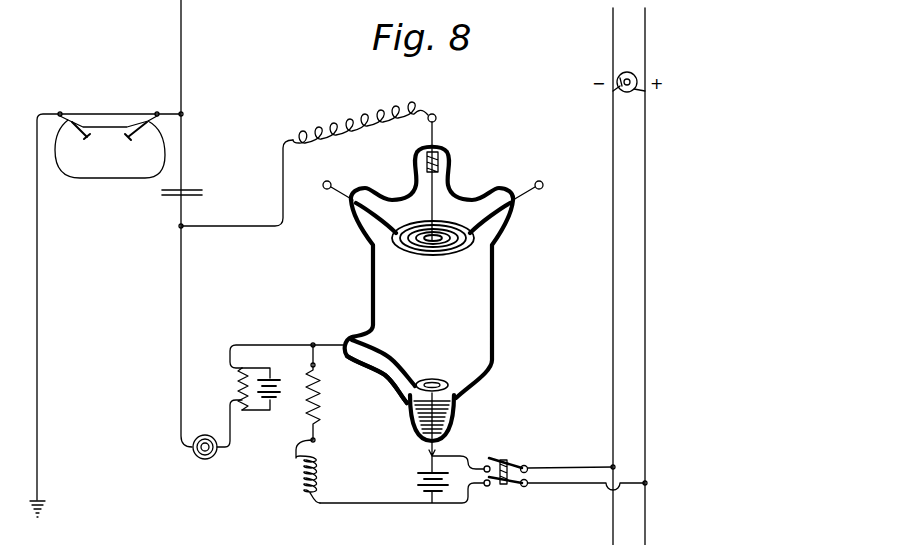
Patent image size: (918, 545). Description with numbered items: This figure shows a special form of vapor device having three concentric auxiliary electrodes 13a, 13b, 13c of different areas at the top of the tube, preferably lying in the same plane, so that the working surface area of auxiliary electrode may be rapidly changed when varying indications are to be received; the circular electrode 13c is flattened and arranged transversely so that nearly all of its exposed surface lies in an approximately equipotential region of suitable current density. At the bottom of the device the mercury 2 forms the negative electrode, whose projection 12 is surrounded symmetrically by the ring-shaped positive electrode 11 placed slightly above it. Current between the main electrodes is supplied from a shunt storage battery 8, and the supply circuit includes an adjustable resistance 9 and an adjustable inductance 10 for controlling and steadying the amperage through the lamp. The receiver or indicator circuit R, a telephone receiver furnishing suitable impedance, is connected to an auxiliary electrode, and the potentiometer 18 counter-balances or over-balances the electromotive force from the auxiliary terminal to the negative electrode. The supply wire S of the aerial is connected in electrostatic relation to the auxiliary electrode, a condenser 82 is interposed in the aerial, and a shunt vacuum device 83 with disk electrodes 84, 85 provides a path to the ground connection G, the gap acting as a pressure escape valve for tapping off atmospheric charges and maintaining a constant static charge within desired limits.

The supply wire S is at (190, 223).
The ground connection G is at (44, 514).
The shunt vacuum device 83 is at (110, 139).
The disk electrode 84 is at (76, 146).
The disk electrode 85 is at (136, 146).
The condenser 82 is at (193, 193).
The auxiliary electrode 13a is at (395, 247).
The auxiliary electrode 13b is at (437, 242).
The circular auxiliary electrode 13c is at (445, 247).
The positive electrode 11 is at (433, 379).
The projection of the negative electrode 12 is at (403, 396).
The mercury 2 is at (455, 412).
The storage battery 8 is at (423, 481).
The receiver or indicator circuit R is at (205, 459).
The potentiometer 18 is at (264, 380).
The adjustable resistance 9 is at (319, 393).
The adjustable inductance 10 is at (320, 471).